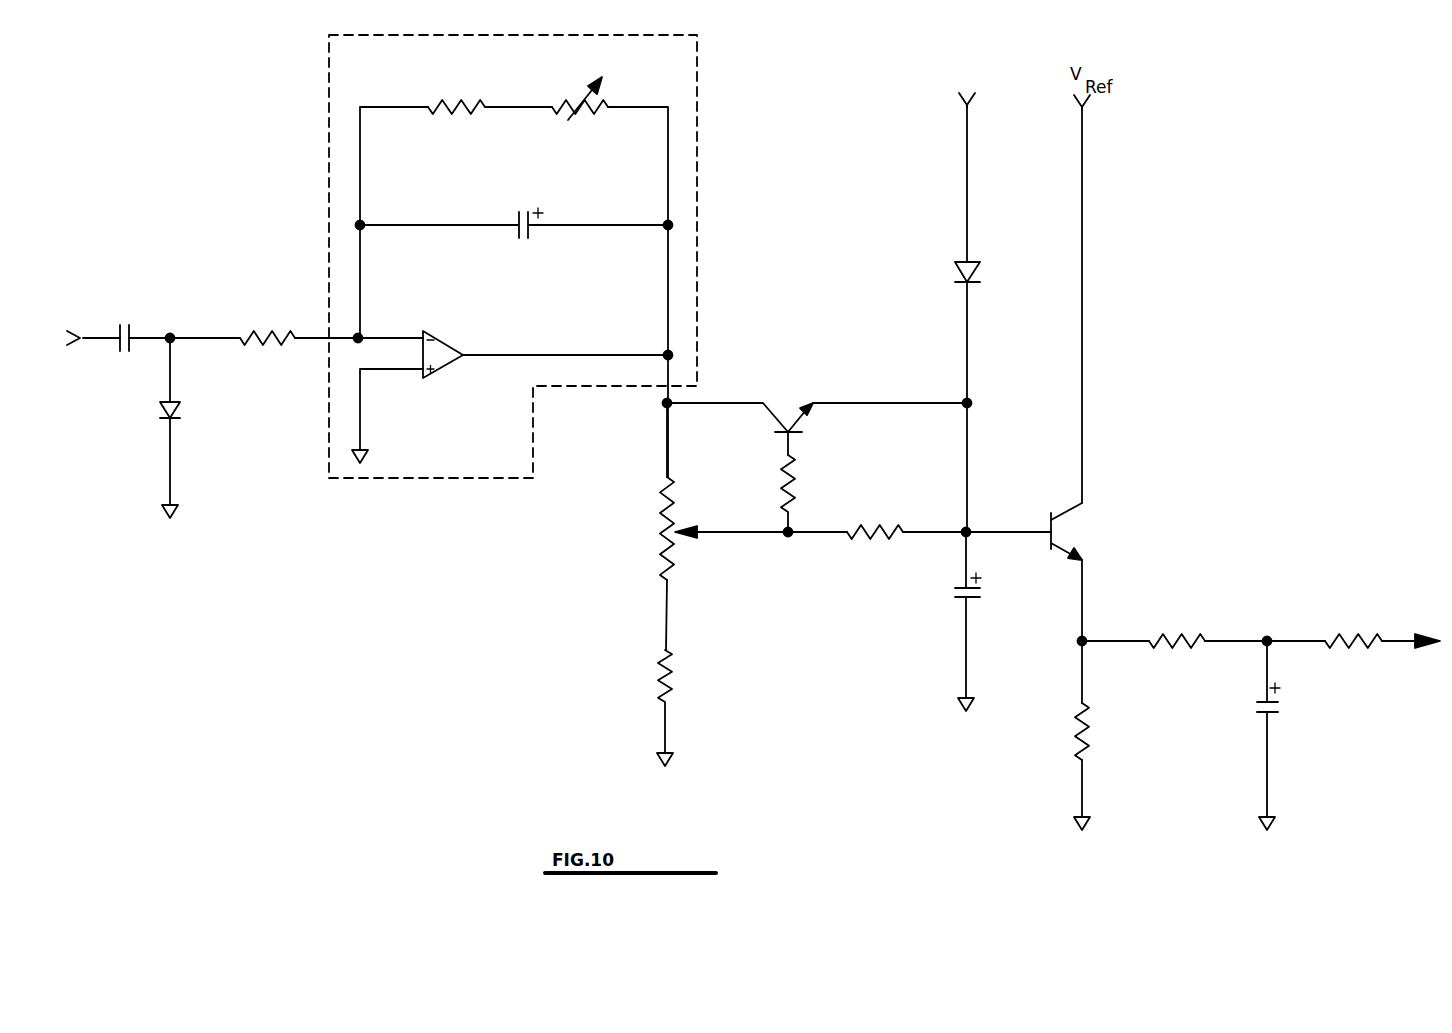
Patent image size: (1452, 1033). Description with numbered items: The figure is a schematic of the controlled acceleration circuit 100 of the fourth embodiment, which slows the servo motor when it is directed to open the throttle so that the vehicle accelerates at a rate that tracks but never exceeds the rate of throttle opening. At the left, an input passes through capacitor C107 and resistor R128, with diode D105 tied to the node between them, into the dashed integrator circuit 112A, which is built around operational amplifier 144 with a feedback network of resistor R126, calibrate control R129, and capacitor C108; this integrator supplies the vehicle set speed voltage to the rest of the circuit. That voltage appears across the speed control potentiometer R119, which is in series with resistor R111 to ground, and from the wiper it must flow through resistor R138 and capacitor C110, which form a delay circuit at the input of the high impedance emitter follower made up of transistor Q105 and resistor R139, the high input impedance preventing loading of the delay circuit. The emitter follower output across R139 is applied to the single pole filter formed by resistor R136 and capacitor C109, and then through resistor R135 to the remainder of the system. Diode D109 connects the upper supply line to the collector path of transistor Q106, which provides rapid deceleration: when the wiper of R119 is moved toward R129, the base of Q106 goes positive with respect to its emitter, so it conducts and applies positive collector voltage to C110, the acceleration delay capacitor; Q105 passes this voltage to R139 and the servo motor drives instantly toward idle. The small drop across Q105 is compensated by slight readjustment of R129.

The input coupling capacitor C107 is at (124, 326).
The input resistor R128 is at (270, 333).
The clamp diode D105 is at (178, 412).
The integrator circuit 112A is at (698, 182).
The feedback resistor R126 is at (446, 104).
The calibrate control R129 is at (566, 104).
The feedback capacitor C108 is at (527, 233).
The operational amplifier 144 is at (448, 343).
The controlled acceleration circuit 100 is at (805, 142).
The transistor Q106 is at (797, 436).
The resistor R139 is at (782, 475).
The speed control potentiometer R119 is at (660, 508).
The resistor R111 is at (660, 667).
The resistor R138 is at (876, 528).
The diode D109 is at (955, 270).
The acceleration delay capacitor C110 is at (962, 600).
The transistor Q105 is at (1062, 548).
The resistor R136 is at (1160, 636).
The output resistor R135 is at (1338, 636).
The capacitor C109 is at (1262, 714).